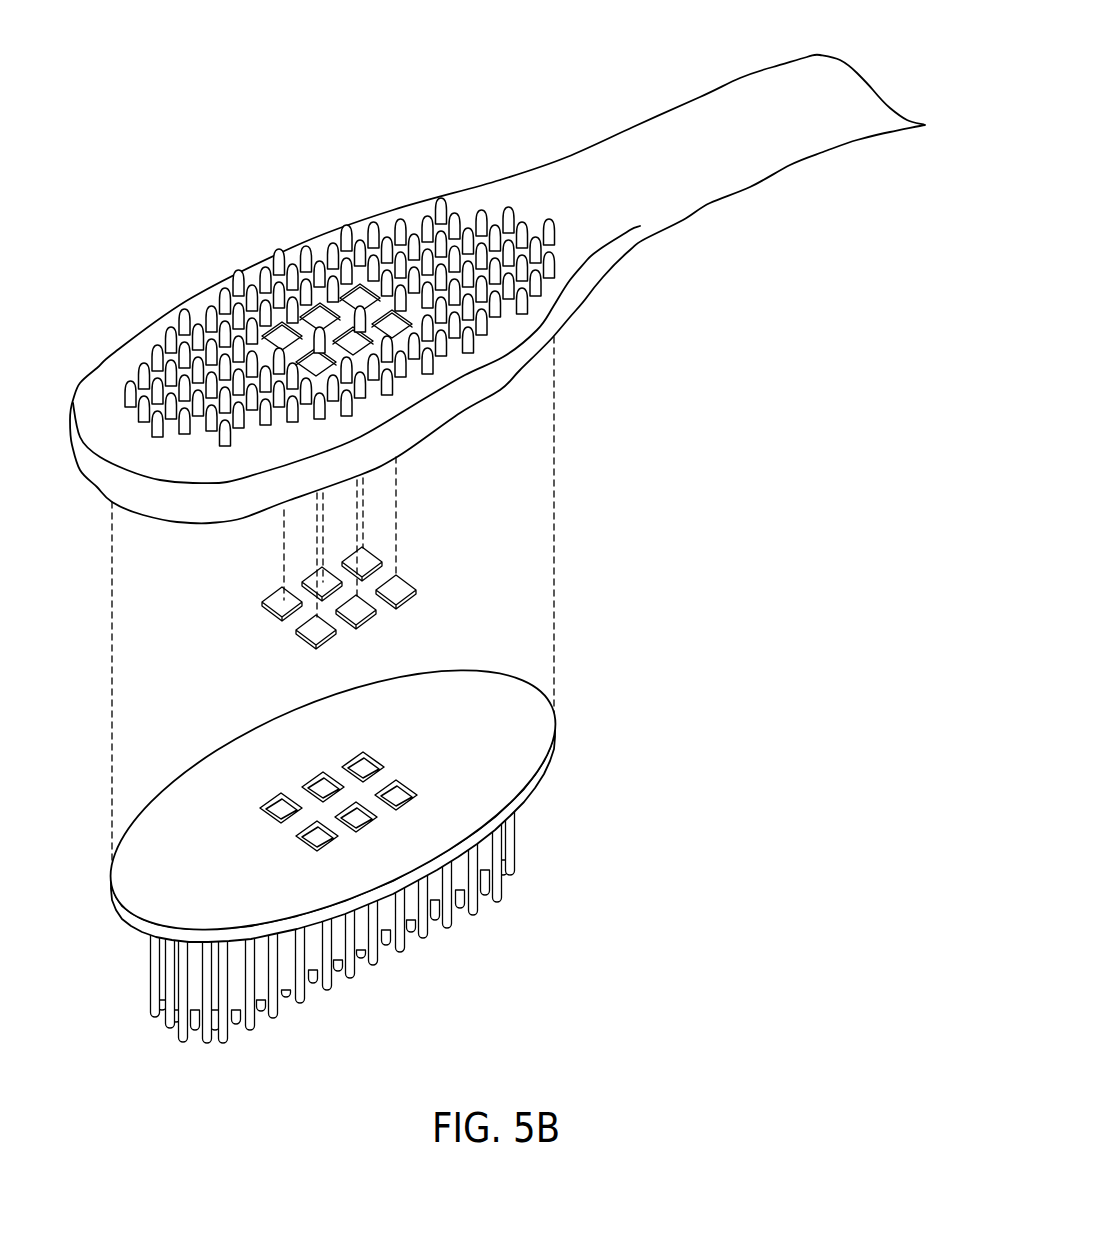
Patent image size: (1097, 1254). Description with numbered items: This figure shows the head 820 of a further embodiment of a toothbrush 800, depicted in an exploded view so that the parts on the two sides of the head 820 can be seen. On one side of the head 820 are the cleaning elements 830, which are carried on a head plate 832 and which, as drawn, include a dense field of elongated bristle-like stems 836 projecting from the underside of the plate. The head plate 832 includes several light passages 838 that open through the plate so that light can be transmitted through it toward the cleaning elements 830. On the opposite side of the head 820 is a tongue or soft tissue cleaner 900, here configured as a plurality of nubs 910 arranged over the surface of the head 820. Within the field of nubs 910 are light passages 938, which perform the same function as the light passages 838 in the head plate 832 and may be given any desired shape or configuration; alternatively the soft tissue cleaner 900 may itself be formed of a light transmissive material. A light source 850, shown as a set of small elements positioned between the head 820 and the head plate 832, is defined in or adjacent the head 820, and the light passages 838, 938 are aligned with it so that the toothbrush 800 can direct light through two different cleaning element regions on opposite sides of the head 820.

The toothbrush 800 is at (483, 90).
The head 820 is at (207, 289).
The cleaning elements 830 is at (333, 842).
The head plate 832 is at (222, 759).
The bristle stems 836 is at (149, 973).
The light passages 838 is at (401, 800).
The light source 850 is at (262, 603).
The soft tissue cleaner 900 is at (343, 252).
The nubs 910 is at (340, 315).
The light passages 938 is at (397, 325).